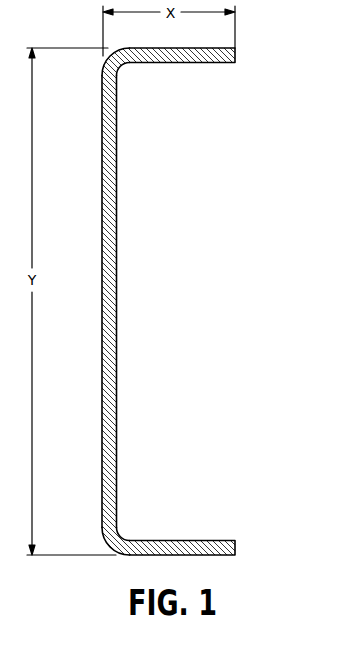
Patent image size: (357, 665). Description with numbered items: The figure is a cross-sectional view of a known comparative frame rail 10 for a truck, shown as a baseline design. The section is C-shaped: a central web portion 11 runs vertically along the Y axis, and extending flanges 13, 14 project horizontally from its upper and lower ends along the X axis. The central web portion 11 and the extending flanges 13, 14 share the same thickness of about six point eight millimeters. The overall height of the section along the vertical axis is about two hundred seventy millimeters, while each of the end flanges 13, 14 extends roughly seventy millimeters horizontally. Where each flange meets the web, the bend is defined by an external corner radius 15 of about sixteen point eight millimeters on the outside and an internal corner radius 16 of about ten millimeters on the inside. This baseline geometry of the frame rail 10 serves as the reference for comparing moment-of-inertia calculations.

The frame rail 10 is at (178, 302).
The central web portion 11 is at (118, 280).
The extending flange 13 is at (215, 62).
The extending flange 14 is at (201, 540).
The external corner radius 15 is at (103, 70).
The internal corner radius 16 is at (122, 42).